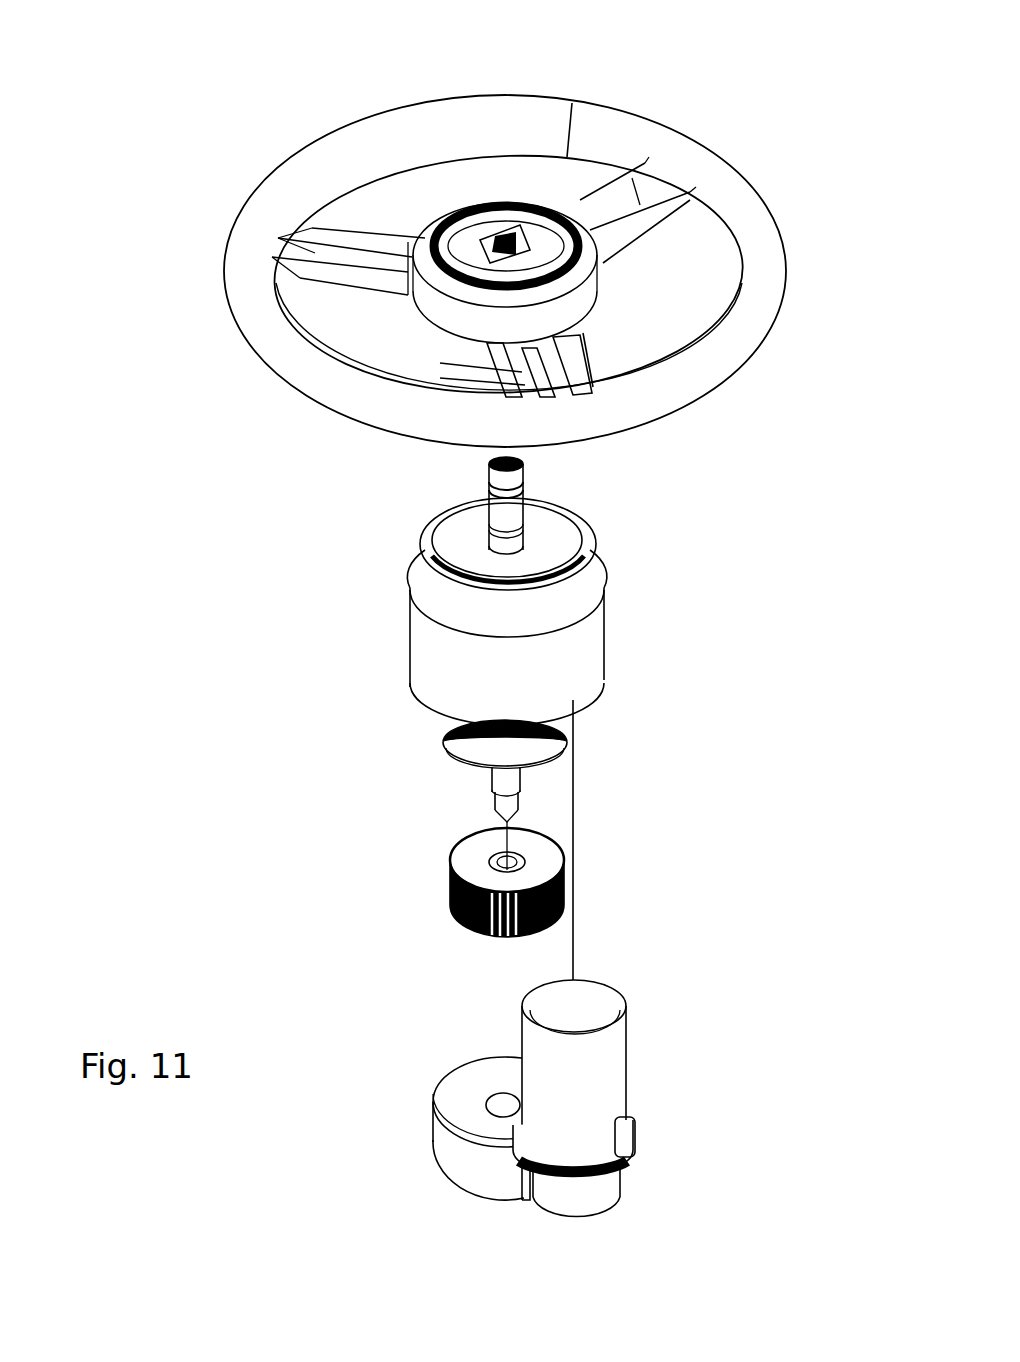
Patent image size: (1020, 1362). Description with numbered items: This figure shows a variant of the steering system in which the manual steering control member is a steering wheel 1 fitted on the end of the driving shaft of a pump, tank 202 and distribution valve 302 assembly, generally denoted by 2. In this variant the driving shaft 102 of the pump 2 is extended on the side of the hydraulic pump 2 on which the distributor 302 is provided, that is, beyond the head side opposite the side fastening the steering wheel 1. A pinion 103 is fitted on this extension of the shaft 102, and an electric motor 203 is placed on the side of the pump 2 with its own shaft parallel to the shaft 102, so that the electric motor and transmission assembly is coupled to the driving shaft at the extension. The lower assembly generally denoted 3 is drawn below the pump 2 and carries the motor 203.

The steering wheel 1 is at (406, 91).
The pump 2 is at (610, 608).
The base assembly 3 is at (414, 1108).
The shaft 102 is at (510, 508).
The pinion 103 is at (450, 875).
The tank 202 is at (430, 645).
The motor 203 is at (613, 1092).
The distribution valve 302 is at (445, 735).